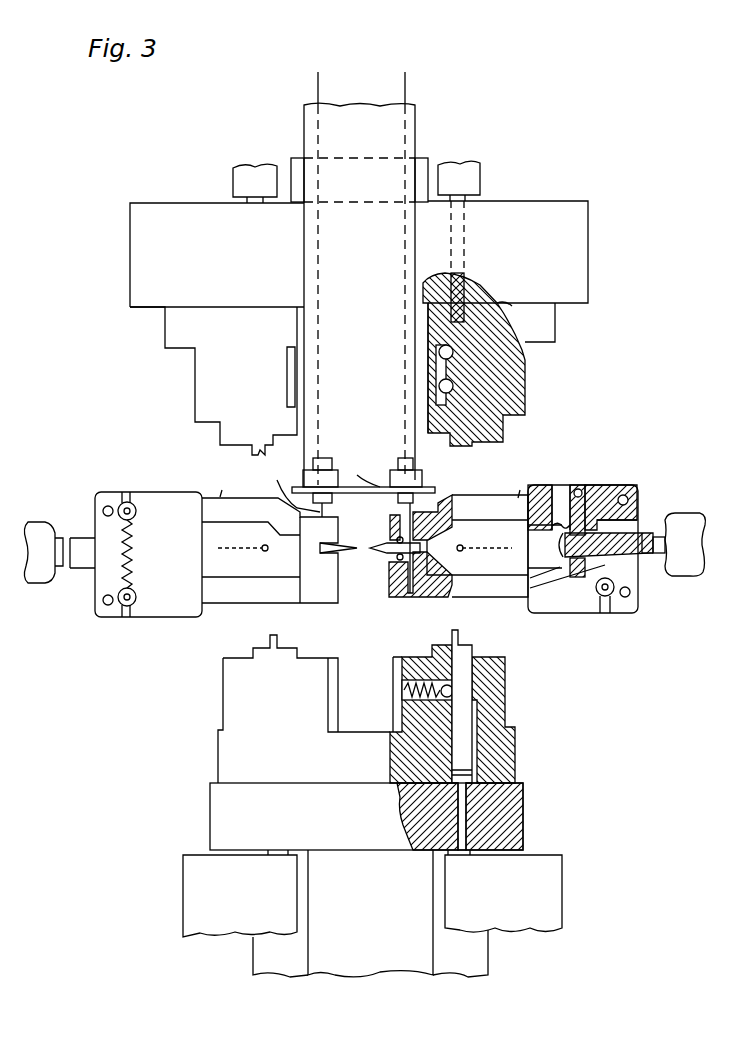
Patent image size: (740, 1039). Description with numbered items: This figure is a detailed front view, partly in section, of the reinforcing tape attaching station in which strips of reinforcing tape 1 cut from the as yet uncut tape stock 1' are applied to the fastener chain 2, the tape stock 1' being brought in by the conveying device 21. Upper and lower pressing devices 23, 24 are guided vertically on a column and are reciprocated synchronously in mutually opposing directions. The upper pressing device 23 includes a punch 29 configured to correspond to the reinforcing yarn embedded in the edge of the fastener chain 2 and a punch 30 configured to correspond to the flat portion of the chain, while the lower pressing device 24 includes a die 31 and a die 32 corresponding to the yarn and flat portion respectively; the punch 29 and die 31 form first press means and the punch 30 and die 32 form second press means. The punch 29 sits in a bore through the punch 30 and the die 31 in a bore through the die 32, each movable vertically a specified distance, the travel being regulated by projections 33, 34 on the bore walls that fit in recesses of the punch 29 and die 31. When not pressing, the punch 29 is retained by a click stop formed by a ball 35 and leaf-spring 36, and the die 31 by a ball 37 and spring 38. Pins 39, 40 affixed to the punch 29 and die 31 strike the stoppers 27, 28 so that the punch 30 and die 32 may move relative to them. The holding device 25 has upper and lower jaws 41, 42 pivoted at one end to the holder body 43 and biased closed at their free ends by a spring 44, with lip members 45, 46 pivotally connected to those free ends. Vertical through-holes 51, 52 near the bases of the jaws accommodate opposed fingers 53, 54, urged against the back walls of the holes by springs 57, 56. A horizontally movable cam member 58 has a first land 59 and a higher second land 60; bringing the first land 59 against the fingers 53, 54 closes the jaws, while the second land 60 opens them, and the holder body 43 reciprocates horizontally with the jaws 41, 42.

The tape stock 1' is at (379, 78).
The reinforcing tape 1 is at (323, 481).
The fastener chain 2 is at (233, 553).
The conveying device 21 is at (415, 112).
The upper pressing device 23 is at (668, 283).
The lower pressing device 24 is at (552, 775).
The holding device 25 is at (689, 478).
The stopper 27 is at (233, 182).
The stopper 28 is at (180, 907).
The punch 29 is at (462, 447).
The punch 30 is at (512, 408).
The die 31 is at (475, 563).
The die 32 is at (505, 660).
The projection 33 is at (465, 380).
The projection 34 is at (480, 710).
The ball 35 is at (440, 410).
The leaf-spring 36 is at (398, 462).
The ball 37 is at (418, 667).
The spring 38 is at (404, 690).
The pin 39 is at (500, 310).
The pin 40 is at (465, 812).
The upper jaw 41 is at (518, 498).
The lower jaw 42 is at (262, 598).
The holder body 43 is at (640, 590).
The spring 44 is at (127, 548).
The lip member 45 is at (357, 548).
The lip member 46 is at (357, 548).
The through-hole 51 is at (568, 486).
The through-hole 52 is at (593, 544).
The finger 53 is at (595, 500).
The finger 54 is at (578, 568).
The spring 56 is at (565, 492).
The spring 57 is at (535, 585).
The cam member 58 is at (676, 525).
The first land 59 is at (625, 530).
The second land 60 is at (645, 525).